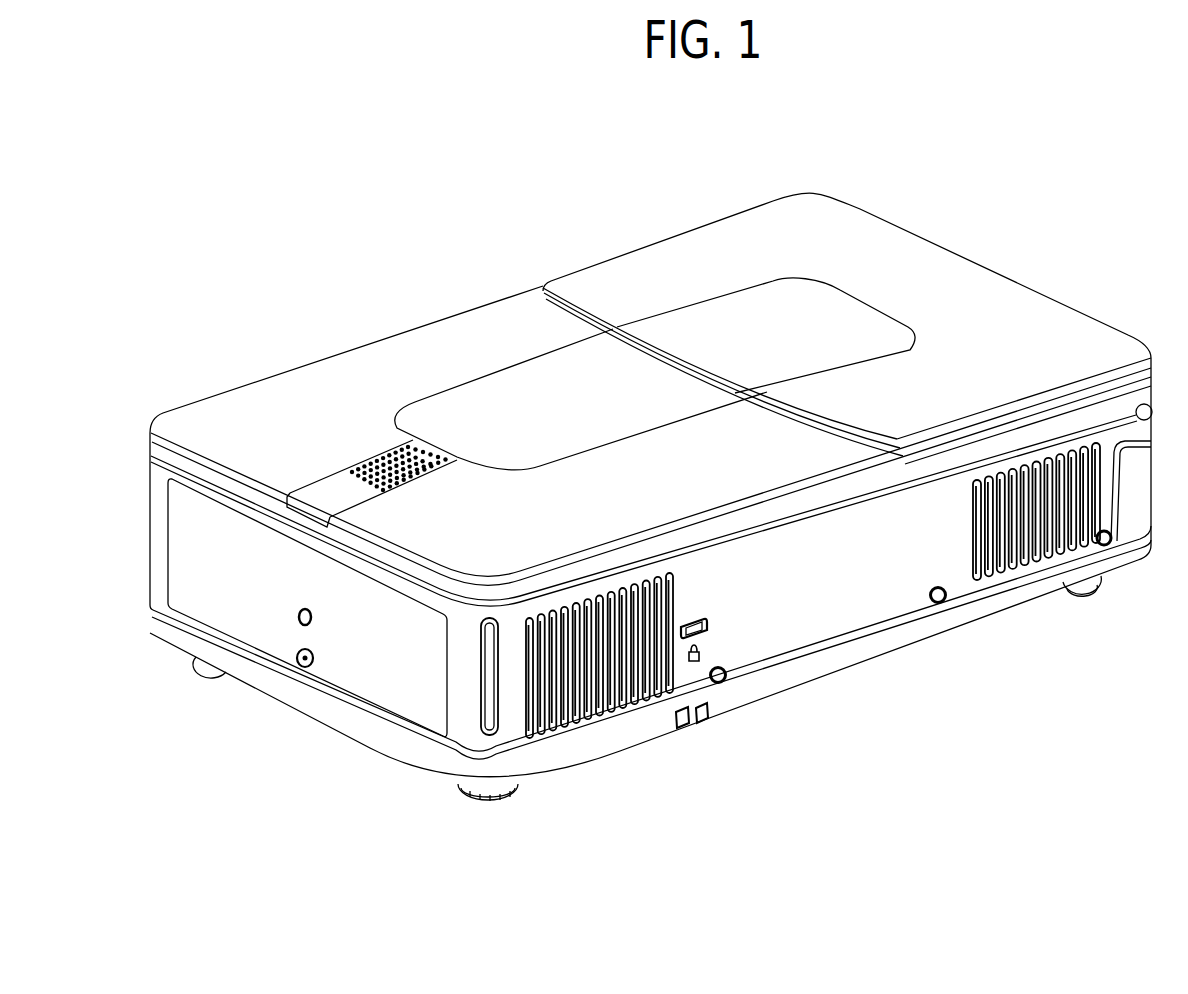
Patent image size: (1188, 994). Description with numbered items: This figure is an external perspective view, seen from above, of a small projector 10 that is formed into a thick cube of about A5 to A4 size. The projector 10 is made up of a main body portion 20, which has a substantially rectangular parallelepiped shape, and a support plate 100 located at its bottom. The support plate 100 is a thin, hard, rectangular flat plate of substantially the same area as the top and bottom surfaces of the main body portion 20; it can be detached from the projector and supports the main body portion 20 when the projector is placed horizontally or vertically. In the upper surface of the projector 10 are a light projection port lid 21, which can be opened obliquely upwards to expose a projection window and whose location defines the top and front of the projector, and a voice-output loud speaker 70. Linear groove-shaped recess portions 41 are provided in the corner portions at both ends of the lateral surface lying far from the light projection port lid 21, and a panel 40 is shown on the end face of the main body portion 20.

The projector 10 is at (335, 268).
The main body portion 20 is at (677, 259).
The light projection port lid 21 is at (905, 272).
The front panel 40 is at (270, 613).
The recess portion 41 is at (483, 683).
The voice-output loud speaker 70 is at (392, 450).
The support plate 100 is at (841, 699).